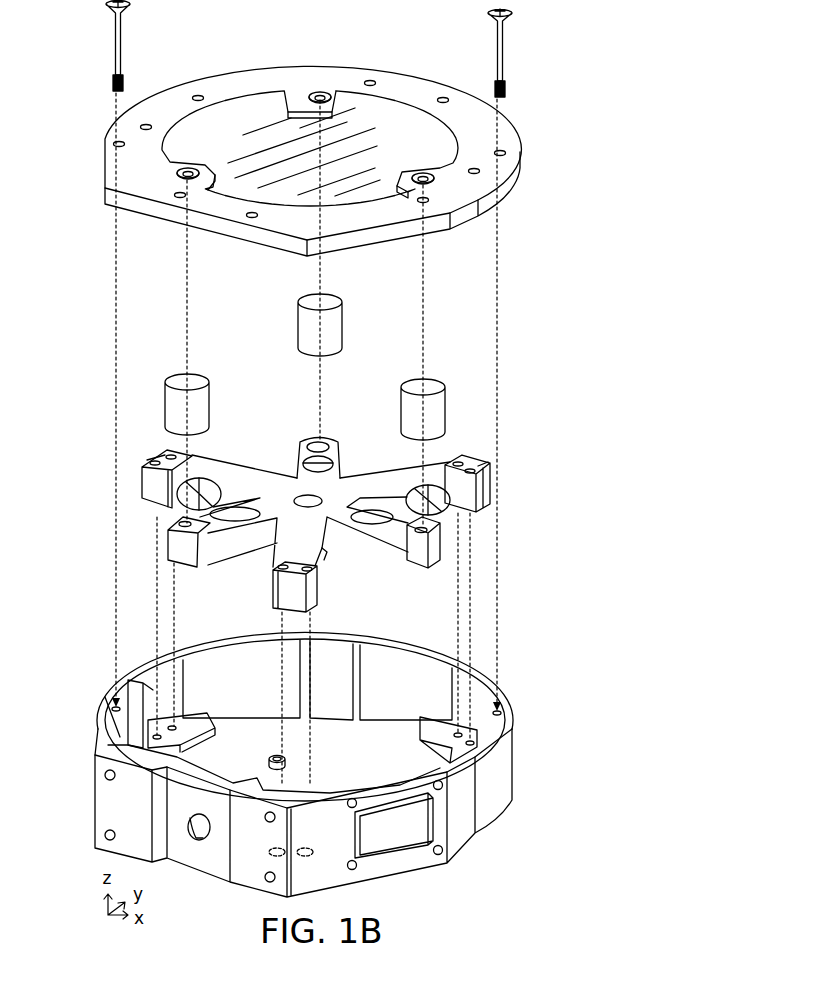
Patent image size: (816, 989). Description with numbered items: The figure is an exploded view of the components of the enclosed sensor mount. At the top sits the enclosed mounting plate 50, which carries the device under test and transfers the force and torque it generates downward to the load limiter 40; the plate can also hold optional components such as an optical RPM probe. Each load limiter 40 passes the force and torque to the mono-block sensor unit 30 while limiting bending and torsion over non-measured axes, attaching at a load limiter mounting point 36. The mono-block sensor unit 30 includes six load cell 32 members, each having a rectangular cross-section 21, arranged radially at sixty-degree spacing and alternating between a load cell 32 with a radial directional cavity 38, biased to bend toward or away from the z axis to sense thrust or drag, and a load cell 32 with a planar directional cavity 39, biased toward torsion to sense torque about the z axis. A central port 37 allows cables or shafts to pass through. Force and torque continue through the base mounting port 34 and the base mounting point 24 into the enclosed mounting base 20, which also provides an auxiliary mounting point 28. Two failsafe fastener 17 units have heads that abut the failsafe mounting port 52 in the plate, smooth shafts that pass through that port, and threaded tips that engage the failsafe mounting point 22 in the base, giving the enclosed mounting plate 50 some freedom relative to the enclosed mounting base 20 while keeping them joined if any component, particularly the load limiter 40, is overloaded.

The failsafe fastener 17 is at (113, 50).
The enclosed mounting base 20 is at (512, 806).
The rectangular cross-section 21 is at (292, 596).
The failsafe mounting point 22 is at (107, 707).
The base mounting point 24 is at (157, 733).
The auxiliary mounting point 28 is at (272, 757).
The mono-block sensor unit 30 is at (357, 506).
The load cell 32 is at (142, 482).
The base mounting port 34 is at (147, 460).
The load limiter mounting point 36 is at (325, 440).
The central port 37 is at (293, 492).
The radial directional cavity 38 is at (218, 462).
The planar directional cavity 39 is at (340, 466).
The load limiter 40 is at (177, 373).
The enclosed mounting plate 50 is at (236, 72).
The failsafe mounting port 52 is at (108, 143).